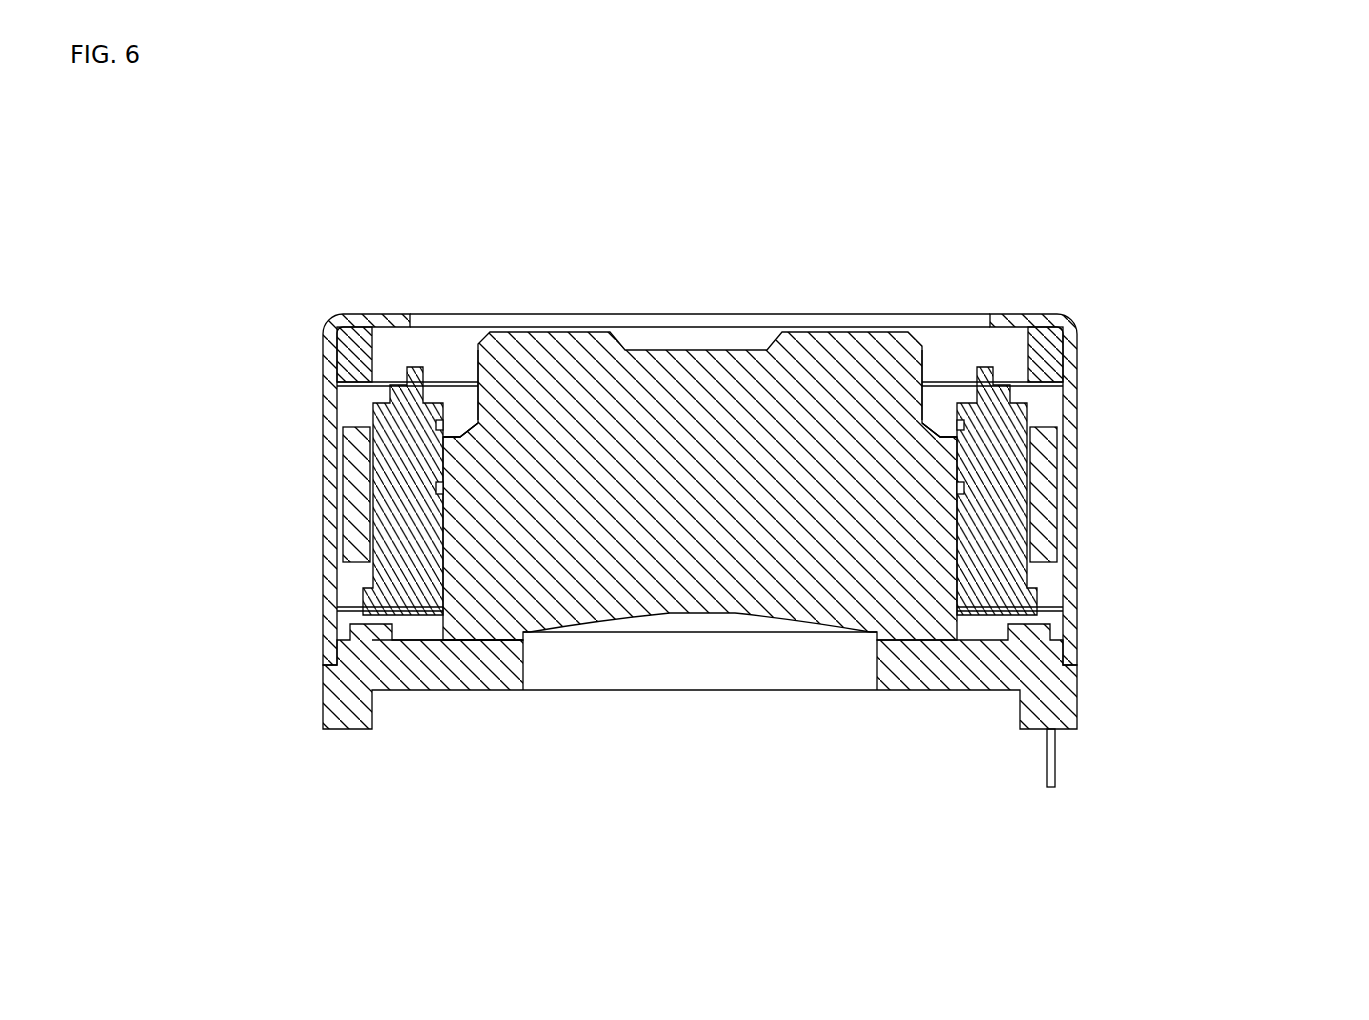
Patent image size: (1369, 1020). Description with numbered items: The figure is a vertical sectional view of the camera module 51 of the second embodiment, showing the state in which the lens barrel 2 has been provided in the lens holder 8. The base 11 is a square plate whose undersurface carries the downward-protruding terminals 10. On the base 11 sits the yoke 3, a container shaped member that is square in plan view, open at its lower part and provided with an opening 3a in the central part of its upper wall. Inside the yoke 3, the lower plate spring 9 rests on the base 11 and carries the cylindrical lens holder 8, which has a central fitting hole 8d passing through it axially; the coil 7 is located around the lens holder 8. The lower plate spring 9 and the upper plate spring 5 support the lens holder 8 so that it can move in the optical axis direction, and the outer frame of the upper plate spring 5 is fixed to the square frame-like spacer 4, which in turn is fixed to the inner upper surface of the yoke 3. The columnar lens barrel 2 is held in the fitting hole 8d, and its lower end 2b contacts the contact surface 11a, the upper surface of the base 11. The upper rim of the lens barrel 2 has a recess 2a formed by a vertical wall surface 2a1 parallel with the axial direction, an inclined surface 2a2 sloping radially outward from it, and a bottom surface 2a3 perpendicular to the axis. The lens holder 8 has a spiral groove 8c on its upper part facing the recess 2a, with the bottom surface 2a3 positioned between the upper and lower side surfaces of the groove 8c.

The camera module 51 is at (1118, 163).
The opening 3a is at (416, 326).
The inclined surface 2a2 is at (466, 398).
The vertical wall surface 2a1 is at (478, 370).
The lens barrel 2 is at (812, 345).
The yoke 3 is at (1018, 322).
The recess 2a is at (440, 398).
The spacer 4 is at (1056, 346).
The upper plate spring 5 is at (440, 410).
The groove 8c is at (438, 428).
The bottom surface 2a3 is at (445, 440).
The fitting hole 8d is at (438, 488).
The lens holder 8 is at (1032, 505).
The coil 7 is at (1050, 548).
The lower plate spring 9 is at (350, 608).
The base 11 is at (1062, 692).
The contact surface 11a is at (473, 642).
The lower end 2b is at (467, 636).
The terminal 10 is at (1056, 763).